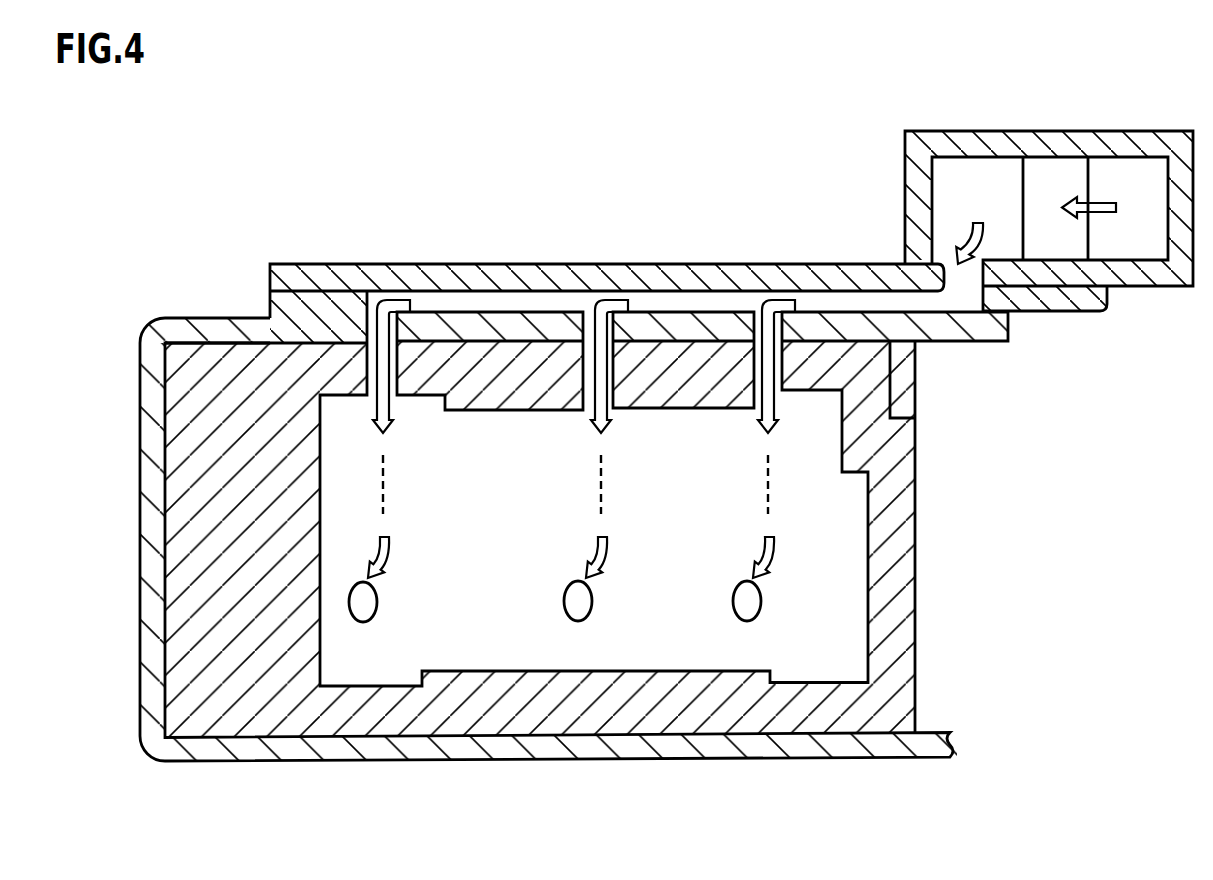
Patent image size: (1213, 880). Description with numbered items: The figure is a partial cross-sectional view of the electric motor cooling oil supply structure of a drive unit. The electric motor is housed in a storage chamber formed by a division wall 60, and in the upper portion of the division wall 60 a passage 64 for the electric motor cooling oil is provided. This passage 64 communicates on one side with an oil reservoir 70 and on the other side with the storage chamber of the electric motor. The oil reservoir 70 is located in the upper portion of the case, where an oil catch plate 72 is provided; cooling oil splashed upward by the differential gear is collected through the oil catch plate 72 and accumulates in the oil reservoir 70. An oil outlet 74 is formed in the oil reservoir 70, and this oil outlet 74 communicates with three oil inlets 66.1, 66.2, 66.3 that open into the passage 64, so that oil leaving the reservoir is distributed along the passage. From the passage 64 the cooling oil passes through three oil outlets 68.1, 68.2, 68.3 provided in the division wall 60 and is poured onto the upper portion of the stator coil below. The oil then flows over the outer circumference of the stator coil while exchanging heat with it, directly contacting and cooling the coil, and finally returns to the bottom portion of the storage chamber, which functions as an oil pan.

The division wall 60 is at (245, 739).
The passage 64 is at (842, 606).
The oil inlet 66.1 is at (368, 345).
The oil inlet 66.2 is at (587, 346).
The oil inlet 66.3 is at (755, 344).
The oil outlet 68.1 is at (356, 622).
The oil outlet 68.2 is at (572, 622).
The oil outlet 68.3 is at (741, 622).
The oil reservoir 70 is at (978, 188).
The oil catch plate 72 is at (1088, 178).
The oil outlet 74 is at (946, 270).